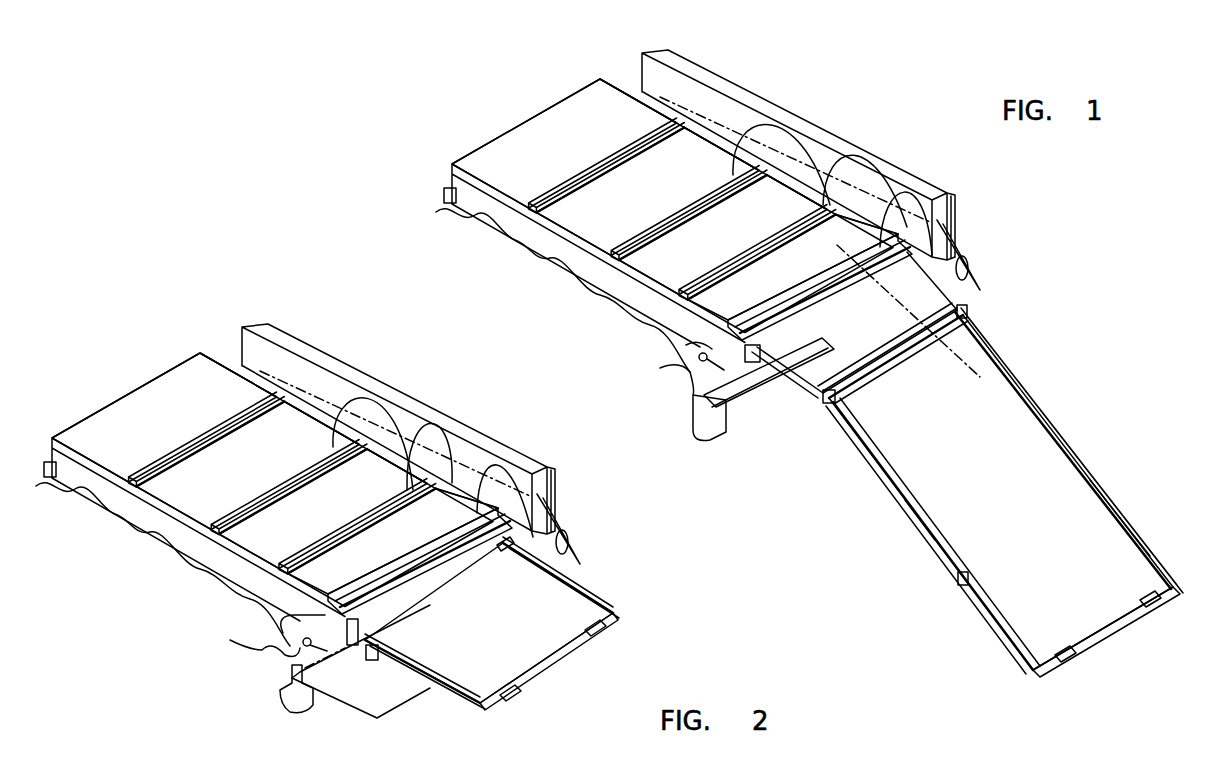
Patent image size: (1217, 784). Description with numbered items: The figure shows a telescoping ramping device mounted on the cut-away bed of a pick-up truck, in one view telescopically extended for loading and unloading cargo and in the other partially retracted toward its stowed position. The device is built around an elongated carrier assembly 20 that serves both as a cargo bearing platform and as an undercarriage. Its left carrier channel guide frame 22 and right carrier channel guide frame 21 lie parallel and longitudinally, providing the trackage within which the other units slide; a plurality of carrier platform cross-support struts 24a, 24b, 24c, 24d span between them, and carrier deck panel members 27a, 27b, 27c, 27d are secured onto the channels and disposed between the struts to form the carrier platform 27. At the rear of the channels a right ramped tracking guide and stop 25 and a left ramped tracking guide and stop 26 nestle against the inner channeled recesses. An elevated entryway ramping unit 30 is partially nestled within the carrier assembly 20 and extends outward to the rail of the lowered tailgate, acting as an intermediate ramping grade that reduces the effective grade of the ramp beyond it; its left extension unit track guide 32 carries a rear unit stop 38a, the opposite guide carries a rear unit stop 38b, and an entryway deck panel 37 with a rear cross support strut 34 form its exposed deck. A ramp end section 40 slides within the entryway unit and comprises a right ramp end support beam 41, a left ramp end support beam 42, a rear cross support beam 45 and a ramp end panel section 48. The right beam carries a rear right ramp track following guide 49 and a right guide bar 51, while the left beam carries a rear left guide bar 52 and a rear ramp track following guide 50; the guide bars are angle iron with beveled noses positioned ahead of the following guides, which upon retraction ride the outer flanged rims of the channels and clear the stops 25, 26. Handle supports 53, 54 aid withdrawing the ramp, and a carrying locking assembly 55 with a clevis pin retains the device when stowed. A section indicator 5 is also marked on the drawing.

In FIG. 1, the section line 5 is at (822, 256).
In FIG. 1, the elongated carrier assembly 20 is at (487, 210).
In FIG. 2, the elongated carrier assembly 20 is at (130, 510).
In FIG. 1, the right carrier channel guide frame 21 is at (957, 227).
In FIG. 2, the right carrier channel guide frame 21 is at (546, 503).
In FIG. 1, the left carrier channel guide frame 22 is at (590, 252).
In FIG. 2, the left carrier channel guide frame 22 is at (187, 543).
In FIG. 1, the carrier platform cross-support strut 24a is at (641, 130).
In FIG. 2, the carrier platform cross-support strut 24a is at (240, 413).
In FIG. 1, the carrier platform cross-support strut 24b is at (786, 115).
In FIG. 2, the carrier platform cross-support strut 24b is at (390, 392).
In FIG. 1, the carrier platform cross-support strut 24c is at (872, 152).
In FIG. 2, the carrier platform cross-support strut 24c is at (457, 427).
In FIG. 1, the carrier platform cross-support strut 24d is at (912, 176).
In FIG. 2, the carrier platform cross-support strut 24d is at (513, 455).
In FIG. 1, the right ramped tracking guide and stop 25 is at (975, 253).
In FIG. 2, the right ramped tracking guide and stop 25 is at (498, 552).
In FIG. 1, the left ramped tracking guide and stop 26 is at (757, 358).
In FIG. 2, the left ramped tracking guide and stop 26 is at (374, 630).
In FIG. 1, the carrier platform 27 is at (496, 126).
In FIG. 2, the carrier platform 27 is at (96, 390).
In FIG. 1, the carrier deck panel member 27a is at (567, 156).
In FIG. 2, the carrier deck panel member 27a is at (172, 430).
In FIG. 1, the carrier deck panel member 27b is at (657, 201).
In FIG. 2, the carrier deck panel member 27b is at (219, 494).
In FIG. 1, the carrier deck panel member 27c is at (732, 247).
In FIG. 2, the carrier deck panel member 27c is at (317, 533).
In FIG. 1, the carrier deck panel member 27d is at (758, 314).
In FIG. 2, the carrier deck panel member 27d is at (404, 559).
In FIG. 1, the elevated entryway ramping unit 30 is at (790, 360).
In FIG. 1, the left extension unit track guide 32 is at (813, 395).
In FIG. 1, the rear cross support strut 34 is at (903, 321).
In FIG. 1, the entryway deck panel 37 is at (841, 346).
In FIG. 1, the rear left unit stop 38a is at (977, 327).
In FIG. 1, the rear left unit stop 38b is at (835, 417).
In FIG. 1, the ramp end section 40 is at (908, 465).
In FIG. 1, the right ramp end support beam 41 is at (1063, 447).
In FIG. 2, the right ramp end support beam 41 is at (574, 556).
In FIG. 1, the left ramp end support beam 42 is at (917, 513).
In FIG. 1, the rear cross support beam 45 is at (1113, 633).
In FIG. 2, the rear cross support beam 45 is at (560, 657).
In FIG. 1, the ramp end panel section 48 is at (991, 484).
In FIG. 2, the ramp end panel section 48 is at (499, 634).
In FIG. 1, the rear right ramp track following guide 49 is at (1127, 521).
In FIG. 2, the rear right ramp track following guide 49 is at (604, 585).
In FIG. 1, the rear ramp track following guide 50 is at (977, 603).
In FIG. 2, the rear ramp track following guide 50 is at (452, 693).
In FIG. 1, the right guide bar 51 is at (1103, 493).
In FIG. 1, the rear left guide bar 52 is at (960, 575).
In FIG. 2, the rear left guide bar 52 is at (372, 655).
In FIG. 1, the handle support 53 is at (1147, 610).
In FIG. 2, the handle support 53 is at (613, 630).
In FIG. 1, the handle support 54 is at (1083, 657).
In FIG. 2, the handle support 54 is at (515, 690).
In FIG. 1, the carrying locking assembly 55 is at (668, 368).
In FIG. 2, the carrying locking assembly 55 is at (270, 660).